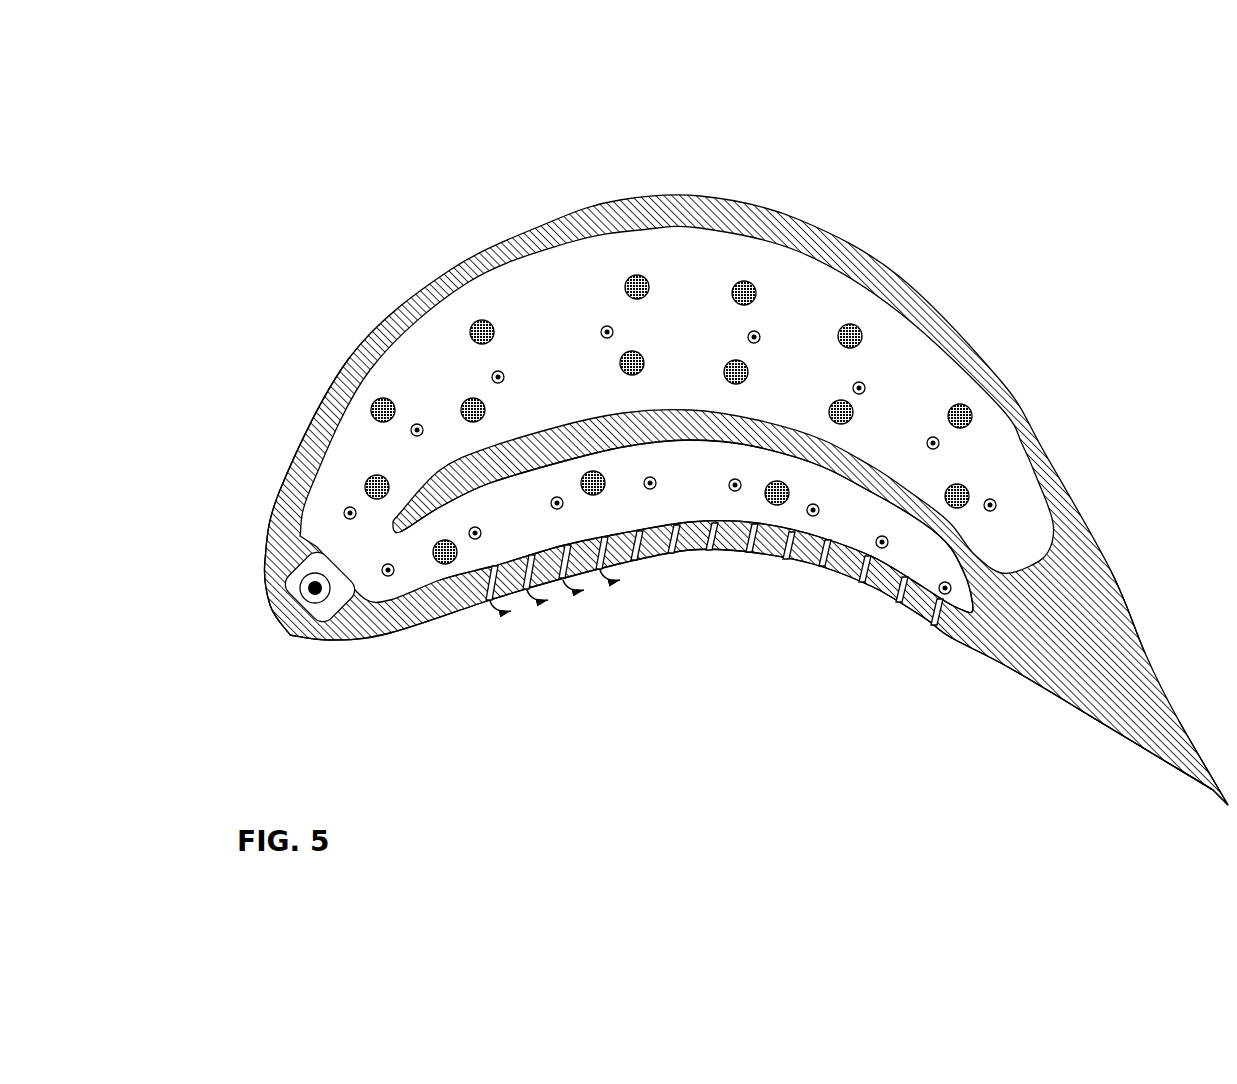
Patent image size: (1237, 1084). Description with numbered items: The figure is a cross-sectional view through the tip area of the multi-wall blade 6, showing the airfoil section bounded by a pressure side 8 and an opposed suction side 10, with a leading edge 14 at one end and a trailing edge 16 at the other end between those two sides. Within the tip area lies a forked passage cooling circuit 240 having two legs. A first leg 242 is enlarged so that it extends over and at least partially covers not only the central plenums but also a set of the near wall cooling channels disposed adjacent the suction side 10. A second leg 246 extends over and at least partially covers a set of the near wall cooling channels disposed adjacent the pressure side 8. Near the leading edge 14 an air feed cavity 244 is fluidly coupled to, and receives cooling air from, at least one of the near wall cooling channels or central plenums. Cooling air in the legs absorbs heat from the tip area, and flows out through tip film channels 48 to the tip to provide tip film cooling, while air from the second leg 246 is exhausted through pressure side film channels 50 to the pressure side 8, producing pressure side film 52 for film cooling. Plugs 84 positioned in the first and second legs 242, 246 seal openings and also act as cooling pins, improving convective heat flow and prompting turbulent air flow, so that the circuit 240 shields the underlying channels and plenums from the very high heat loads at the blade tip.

The multi-wall blade 6 is at (1018, 152).
The pressure side 8 is at (612, 665).
The suction side 10 is at (710, 170).
The leading edge 14 is at (252, 648).
The trailing edge 16 is at (1200, 815).
The tip film channel 48 is at (506, 377).
The pressure side film channel 50 is at (715, 553).
The pressure side film 52 is at (535, 613).
The plug 84 is at (725, 375).
The forked passage cooling circuit 240 is at (520, 258).
The first leg 242 is at (656, 358).
The air feed cavity 244 is at (288, 632).
The second leg 246 is at (668, 486).